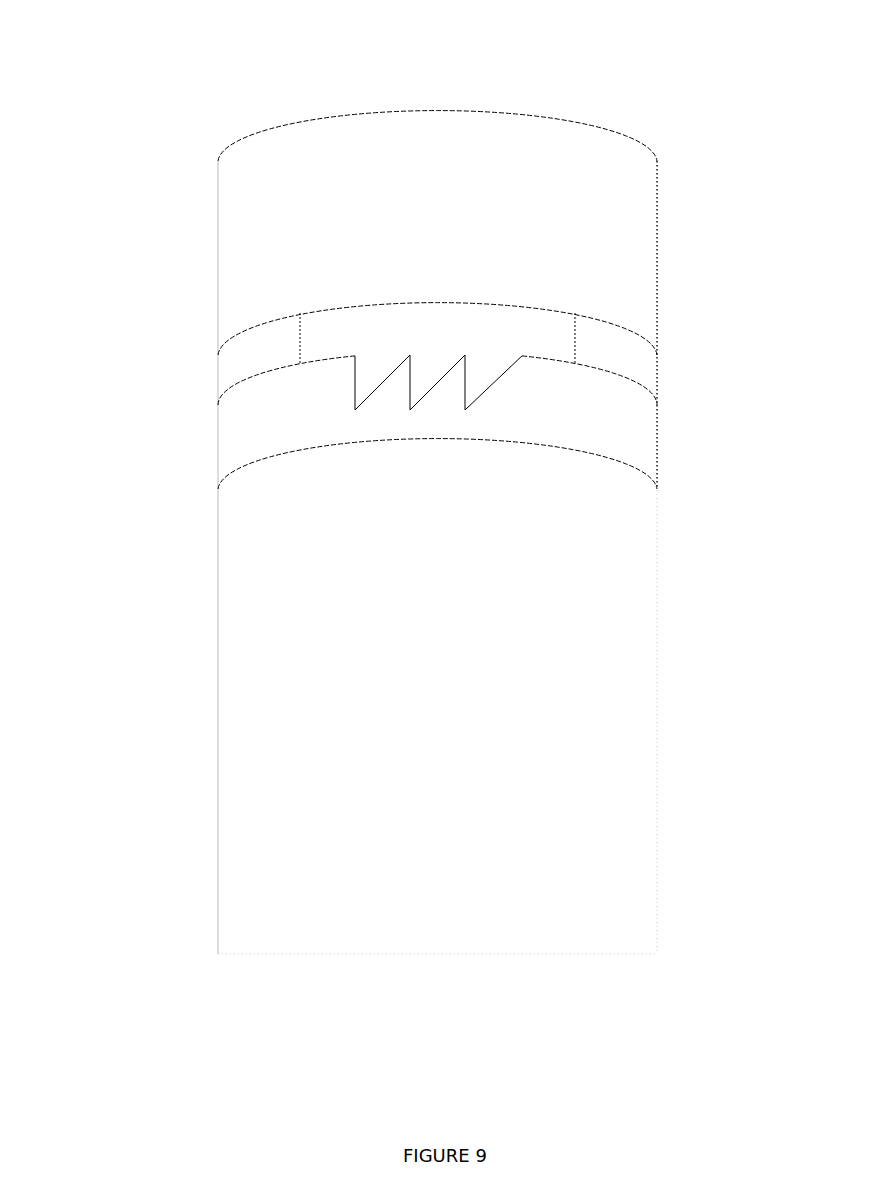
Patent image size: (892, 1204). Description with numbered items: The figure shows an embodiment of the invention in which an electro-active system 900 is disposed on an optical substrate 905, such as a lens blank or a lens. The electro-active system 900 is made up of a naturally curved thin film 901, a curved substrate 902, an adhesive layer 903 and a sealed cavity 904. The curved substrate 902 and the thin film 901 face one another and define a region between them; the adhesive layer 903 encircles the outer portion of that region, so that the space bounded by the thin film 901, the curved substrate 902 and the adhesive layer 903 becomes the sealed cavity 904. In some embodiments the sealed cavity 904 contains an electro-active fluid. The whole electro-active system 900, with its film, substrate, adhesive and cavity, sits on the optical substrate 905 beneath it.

The heating assembly 900 is at (409, 492).
The naturally curved thin film 901 is at (630, 439).
The curved substrate 902 is at (630, 233).
The adhesive layer 903 is at (230, 356).
The sealed cavity 904 is at (328, 329).
The optical substrate 905 is at (617, 763).